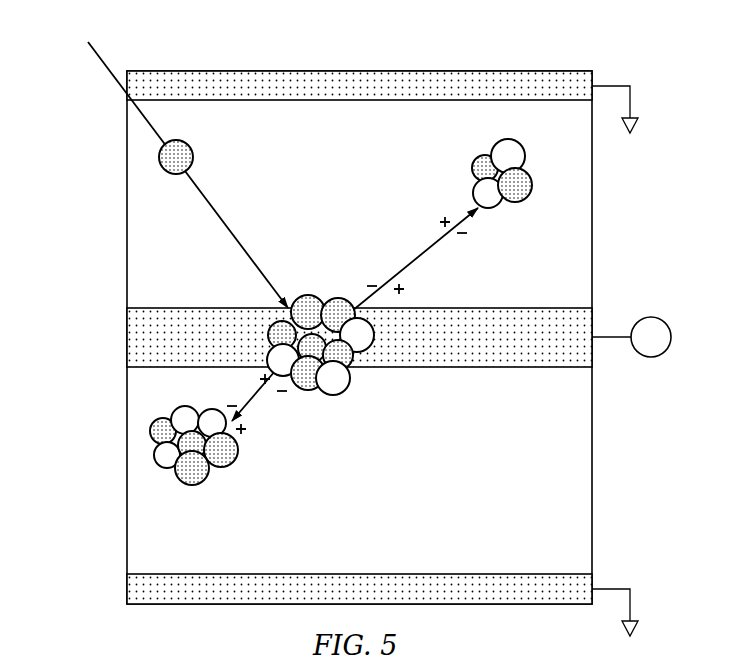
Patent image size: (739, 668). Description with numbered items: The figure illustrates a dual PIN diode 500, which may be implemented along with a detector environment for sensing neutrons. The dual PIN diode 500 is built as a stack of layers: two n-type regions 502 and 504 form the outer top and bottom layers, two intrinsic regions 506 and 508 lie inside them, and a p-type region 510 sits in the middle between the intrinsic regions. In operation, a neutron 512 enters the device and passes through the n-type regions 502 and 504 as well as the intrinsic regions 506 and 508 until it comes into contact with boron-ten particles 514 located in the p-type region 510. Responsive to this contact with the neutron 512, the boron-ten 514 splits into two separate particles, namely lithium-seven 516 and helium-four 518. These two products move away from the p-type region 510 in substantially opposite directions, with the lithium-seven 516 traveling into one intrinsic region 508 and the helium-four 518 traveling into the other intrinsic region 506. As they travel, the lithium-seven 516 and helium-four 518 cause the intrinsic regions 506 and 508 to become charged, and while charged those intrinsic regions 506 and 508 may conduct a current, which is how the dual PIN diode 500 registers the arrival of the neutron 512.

The dual PIN diode 500 is at (82, 155).
The n-type region 502 is at (234, 70).
The n-type region 504 is at (127, 589).
The intrinsic region 506 is at (378, 207).
The intrinsic region 508 is at (378, 527).
The p-type region 510 is at (127, 338).
The neutron 512 is at (177, 175).
The Boron 10 514 is at (332, 397).
The Lithium 7 516 is at (190, 487).
The Helium 4 518 is at (516, 205).